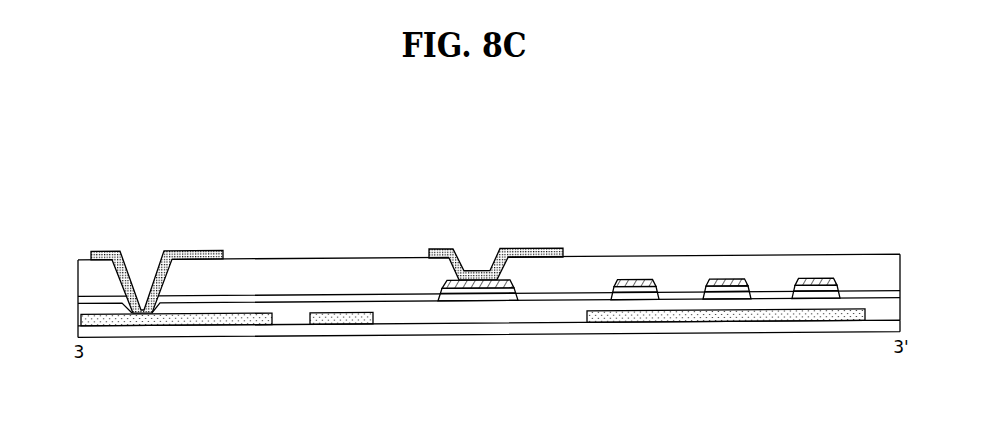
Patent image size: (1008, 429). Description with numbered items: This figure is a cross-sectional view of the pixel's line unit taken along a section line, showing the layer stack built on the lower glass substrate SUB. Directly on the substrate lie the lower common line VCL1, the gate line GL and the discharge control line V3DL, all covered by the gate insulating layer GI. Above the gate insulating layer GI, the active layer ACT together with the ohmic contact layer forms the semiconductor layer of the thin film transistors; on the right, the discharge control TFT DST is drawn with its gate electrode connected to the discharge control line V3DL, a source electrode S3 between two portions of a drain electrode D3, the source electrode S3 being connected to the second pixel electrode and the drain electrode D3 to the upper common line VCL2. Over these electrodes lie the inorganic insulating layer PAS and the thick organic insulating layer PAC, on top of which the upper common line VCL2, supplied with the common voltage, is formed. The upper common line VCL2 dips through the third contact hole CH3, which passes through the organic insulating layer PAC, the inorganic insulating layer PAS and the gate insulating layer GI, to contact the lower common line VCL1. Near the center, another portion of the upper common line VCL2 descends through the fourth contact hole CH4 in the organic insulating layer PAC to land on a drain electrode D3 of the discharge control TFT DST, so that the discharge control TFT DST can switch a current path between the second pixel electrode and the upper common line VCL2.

The third contact hole CH3 is at (142, 250).
The fourth contact hole CH4 is at (479, 246).
The upper common line VCL2 is at (205, 251).
The lower common line VCL1 is at (203, 321).
The discharge control TFT DST is at (819, 192).
The drain electrode of the discharge control TFT D3 is at (636, 279).
The source electrode of the discharge control TFT S3 is at (727, 279).
The organic insulating layer PAC is at (78, 272).
The inorganic insulating layer PAS is at (78, 297).
The gate insulating layer GI is at (78, 304).
The lower glass substrate SUB is at (78, 331).
The gate line GL is at (345, 321).
The active layer ACT is at (502, 298).
The discharge control line V3DL is at (722, 317).